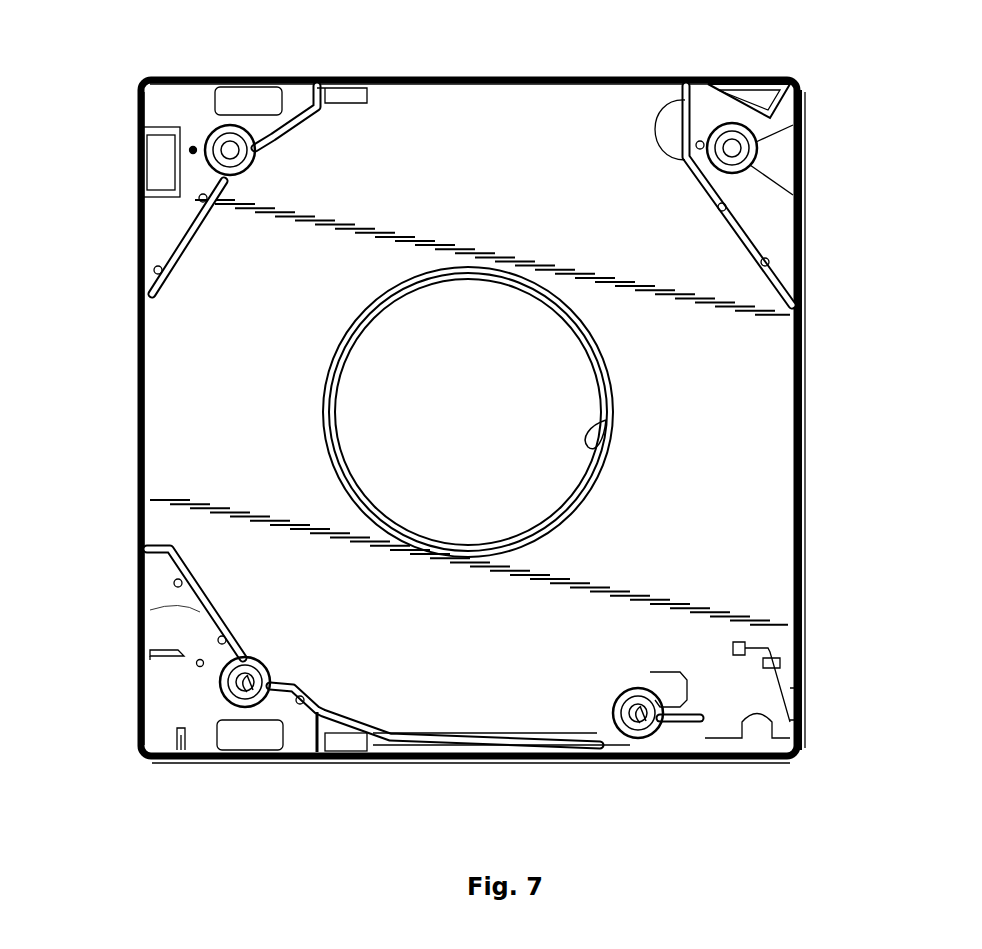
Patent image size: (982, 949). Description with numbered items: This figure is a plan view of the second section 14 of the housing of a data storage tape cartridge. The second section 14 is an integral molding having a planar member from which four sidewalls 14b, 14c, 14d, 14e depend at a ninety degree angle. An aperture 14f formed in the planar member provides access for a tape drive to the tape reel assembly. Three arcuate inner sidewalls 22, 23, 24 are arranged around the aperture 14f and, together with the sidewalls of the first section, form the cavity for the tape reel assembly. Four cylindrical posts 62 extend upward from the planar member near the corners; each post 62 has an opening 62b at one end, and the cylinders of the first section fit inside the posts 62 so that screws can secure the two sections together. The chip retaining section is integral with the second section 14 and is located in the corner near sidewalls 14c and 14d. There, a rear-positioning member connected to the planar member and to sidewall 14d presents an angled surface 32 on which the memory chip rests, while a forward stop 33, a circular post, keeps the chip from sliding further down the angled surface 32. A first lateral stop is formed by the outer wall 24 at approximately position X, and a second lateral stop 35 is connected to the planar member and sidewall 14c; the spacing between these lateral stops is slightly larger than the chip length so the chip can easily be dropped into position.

The second section 14 is at (805, 538).
The sidewall 14b is at (805, 335).
The sidewall 14c is at (512, 762).
The sidewall 14d is at (137, 455).
The sidewall 14e is at (517, 75).
The aperture 14f is at (606, 418).
The arcuate inner sidewall 22 is at (747, 240).
The arcuate inner sidewall 23 is at (180, 260).
The arcuate inner sidewall 24 is at (215, 608).
The angled surface 32 is at (150, 650).
The forward stop 33 is at (198, 660).
The second lateral stop 35 is at (193, 747).
The cylindrical post 62 is at (215, 130).
The opening 62b is at (265, 672).
The position X is at (190, 603).